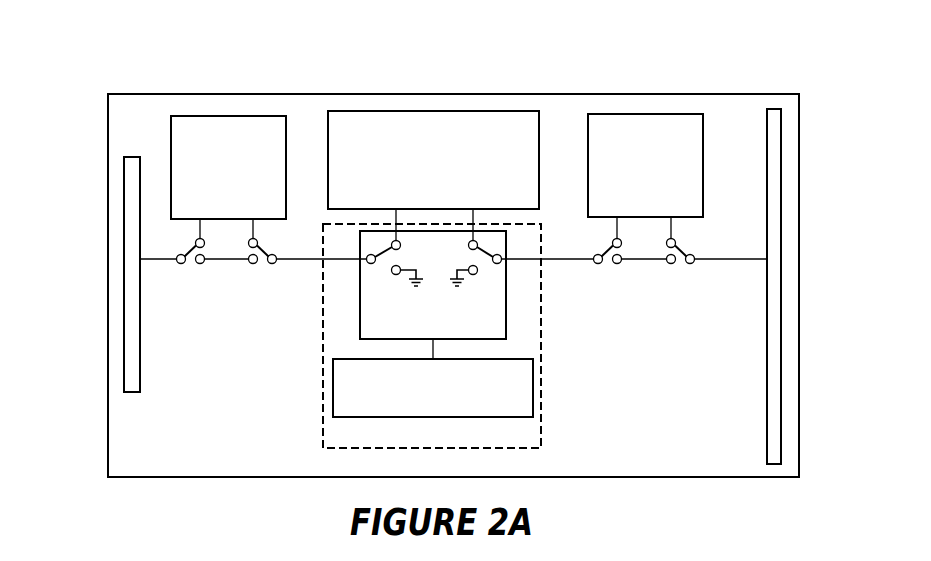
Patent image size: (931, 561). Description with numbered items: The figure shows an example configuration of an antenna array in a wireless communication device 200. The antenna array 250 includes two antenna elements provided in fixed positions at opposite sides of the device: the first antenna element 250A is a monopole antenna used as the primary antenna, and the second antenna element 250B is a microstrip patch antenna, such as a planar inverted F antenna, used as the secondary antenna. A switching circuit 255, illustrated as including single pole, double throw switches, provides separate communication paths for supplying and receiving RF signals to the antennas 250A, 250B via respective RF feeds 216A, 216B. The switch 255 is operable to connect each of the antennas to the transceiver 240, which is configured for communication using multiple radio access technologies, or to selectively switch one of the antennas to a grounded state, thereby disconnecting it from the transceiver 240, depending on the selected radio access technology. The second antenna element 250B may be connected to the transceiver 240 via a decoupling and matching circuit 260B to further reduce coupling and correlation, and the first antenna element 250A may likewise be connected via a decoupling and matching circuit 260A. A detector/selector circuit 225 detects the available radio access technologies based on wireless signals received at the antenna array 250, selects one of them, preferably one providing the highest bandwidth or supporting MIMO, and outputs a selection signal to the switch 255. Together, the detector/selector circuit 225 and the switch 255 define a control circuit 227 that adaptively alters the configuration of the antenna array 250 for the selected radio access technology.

The wireless communication device 200 is at (740, 459).
The antenna array 250 is at (773, 107).
The first antenna element 250A is at (782, 252).
The second antenna element 250B is at (124, 272).
The decoupling and matching circuit 260A is at (663, 196).
The decoupling and matching circuit 260B is at (246, 196).
The transceiver 240 is at (446, 178).
The RF feed 216A is at (726, 258).
The RF feed 216B is at (310, 260).
The switching circuit 255 is at (447, 331).
The detector/selector circuit 225 is at (445, 406).
The control circuit 227 is at (446, 442).